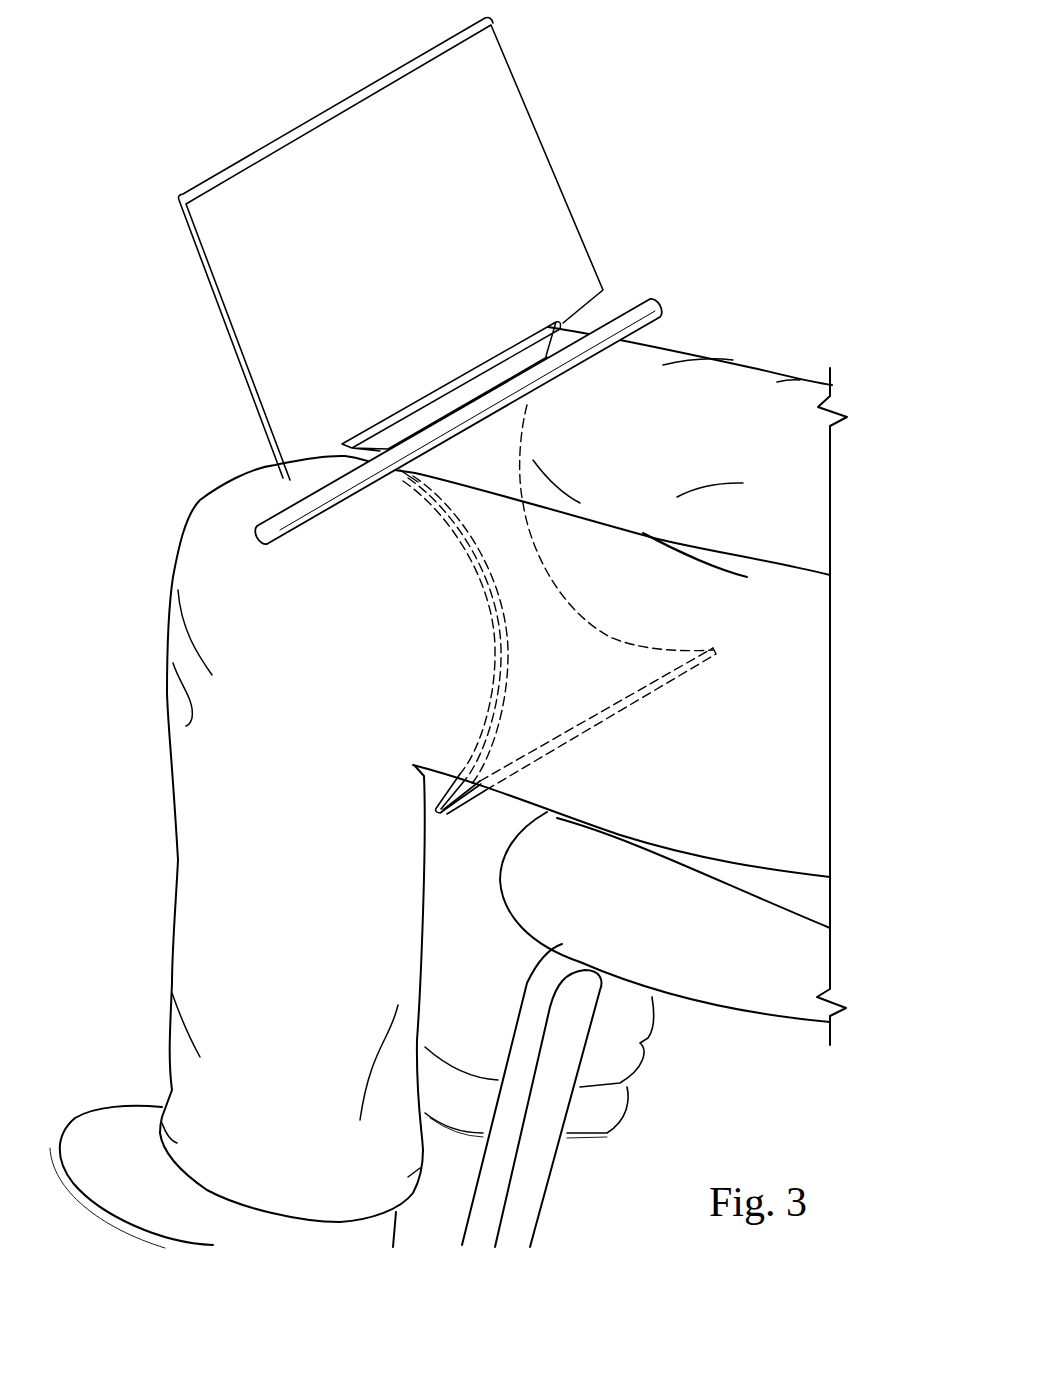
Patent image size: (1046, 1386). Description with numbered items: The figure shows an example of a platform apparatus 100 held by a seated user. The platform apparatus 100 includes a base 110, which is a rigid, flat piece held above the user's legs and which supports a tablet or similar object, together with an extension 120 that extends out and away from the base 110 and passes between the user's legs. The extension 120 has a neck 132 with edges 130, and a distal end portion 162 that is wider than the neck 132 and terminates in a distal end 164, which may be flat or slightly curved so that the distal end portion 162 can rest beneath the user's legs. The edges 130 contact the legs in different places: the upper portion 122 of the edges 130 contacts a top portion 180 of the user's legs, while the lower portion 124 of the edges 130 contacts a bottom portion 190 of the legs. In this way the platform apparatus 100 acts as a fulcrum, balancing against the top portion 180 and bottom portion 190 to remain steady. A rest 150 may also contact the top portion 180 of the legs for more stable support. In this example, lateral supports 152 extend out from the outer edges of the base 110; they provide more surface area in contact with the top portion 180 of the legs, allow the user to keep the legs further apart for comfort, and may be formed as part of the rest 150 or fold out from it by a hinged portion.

The platform apparatus 100 is at (663, 89).
The base 110 is at (342, 128).
The extension 120 is at (529, 609).
The upper portion of the edges 122 is at (433, 500).
The lower portion of the edges 124 is at (480, 740).
The edges 130 is at (487, 577).
The neck 132 is at (495, 630).
The rest 150 is at (458, 380).
The lateral supports 152 is at (293, 533).
The distal end portion 162 is at (628, 682).
The distal end 164 is at (590, 725).
The top portion of a user's legs 180 is at (750, 563).
The bottom portion of a user's legs 190 is at (623, 805).